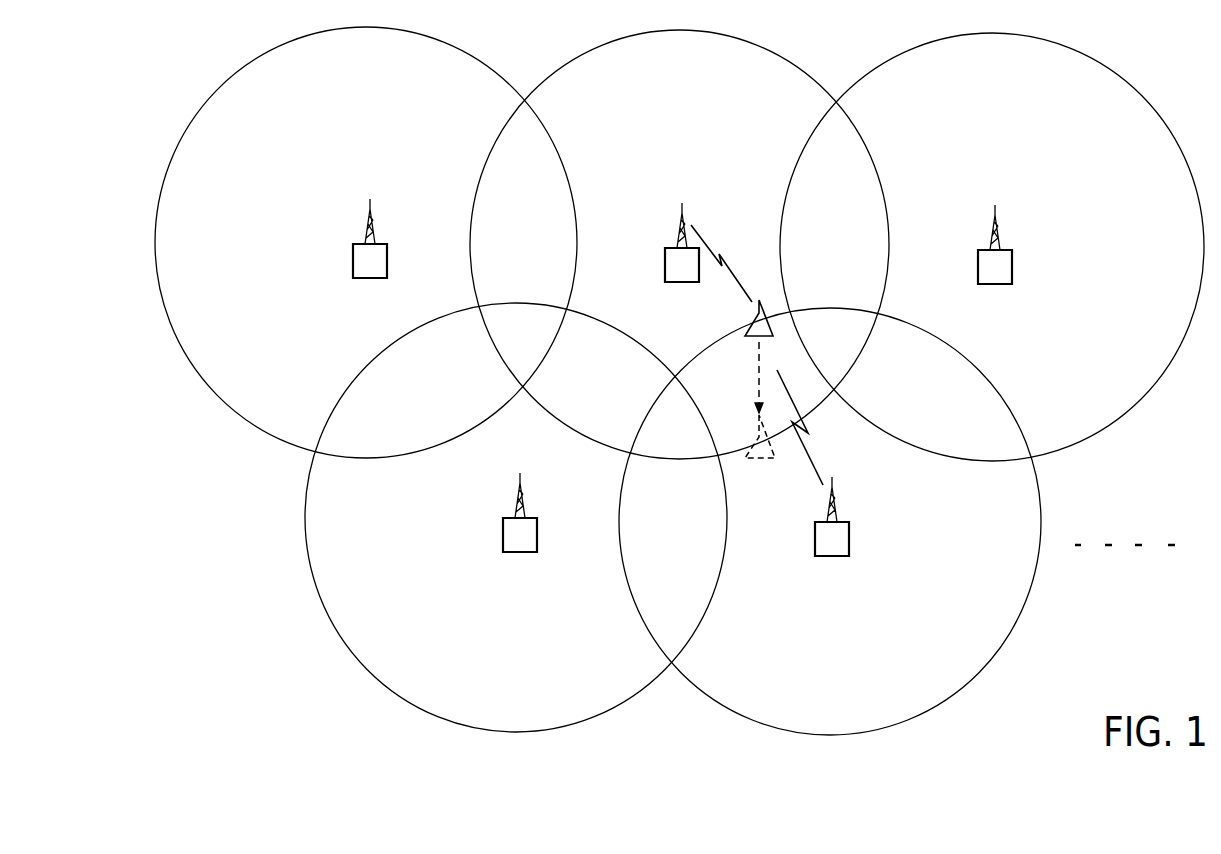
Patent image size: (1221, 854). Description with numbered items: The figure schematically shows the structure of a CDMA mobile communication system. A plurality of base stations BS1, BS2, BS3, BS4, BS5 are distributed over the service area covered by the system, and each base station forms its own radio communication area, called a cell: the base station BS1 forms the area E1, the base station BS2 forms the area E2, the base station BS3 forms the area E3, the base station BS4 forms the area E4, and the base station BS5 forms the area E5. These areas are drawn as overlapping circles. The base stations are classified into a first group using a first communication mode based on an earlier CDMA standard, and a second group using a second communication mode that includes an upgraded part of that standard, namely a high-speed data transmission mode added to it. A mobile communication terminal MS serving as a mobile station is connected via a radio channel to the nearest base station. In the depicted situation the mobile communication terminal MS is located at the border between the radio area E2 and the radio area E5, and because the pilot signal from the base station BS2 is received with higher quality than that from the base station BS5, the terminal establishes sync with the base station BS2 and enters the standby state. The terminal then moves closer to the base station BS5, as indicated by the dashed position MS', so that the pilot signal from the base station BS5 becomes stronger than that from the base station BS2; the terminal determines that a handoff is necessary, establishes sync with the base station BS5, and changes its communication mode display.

The radio communication area E1 is at (485, 58).
The radio communication area E2 is at (793, 60).
The radio communication area E3 is at (1105, 60).
The radio communication area E4 is at (600, 715).
The radio communication area E5 is at (912, 720).
The base station BS1 is at (370, 255).
The base station BS2 is at (682, 259).
The base station BS3 is at (995, 260).
The base station BS4 is at (521, 529).
The base station BS5 is at (832, 532).
The mobile communication terminal MS is at (757, 355).
The mobile communication terminal after movement MS' is at (762, 415).